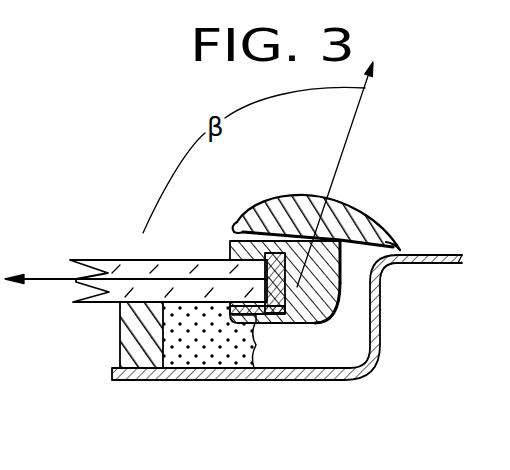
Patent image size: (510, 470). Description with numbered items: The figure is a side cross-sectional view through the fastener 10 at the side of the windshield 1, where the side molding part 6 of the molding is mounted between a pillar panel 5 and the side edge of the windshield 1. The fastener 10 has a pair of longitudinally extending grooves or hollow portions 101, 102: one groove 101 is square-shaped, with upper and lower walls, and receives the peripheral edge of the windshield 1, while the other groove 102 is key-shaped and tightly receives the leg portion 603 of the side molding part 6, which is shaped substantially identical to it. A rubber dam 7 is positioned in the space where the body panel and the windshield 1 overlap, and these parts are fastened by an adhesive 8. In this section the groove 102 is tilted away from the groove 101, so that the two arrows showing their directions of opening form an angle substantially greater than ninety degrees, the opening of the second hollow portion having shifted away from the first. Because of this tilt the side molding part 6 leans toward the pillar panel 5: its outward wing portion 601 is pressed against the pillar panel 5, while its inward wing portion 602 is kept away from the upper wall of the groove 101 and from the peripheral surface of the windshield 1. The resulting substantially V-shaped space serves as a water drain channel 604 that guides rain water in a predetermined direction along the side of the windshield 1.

The windshield 1 is at (126, 270).
The pillar panel 5 is at (430, 257).
The side molding part 6 is at (285, 193).
The rubber dam 7 is at (130, 347).
The adhesive 8 is at (213, 346).
The fastener 10 is at (325, 335).
The groove 101 is at (257, 324).
The groove 102 is at (342, 288).
The outward wing portion 601 is at (402, 246).
The inward wing portion 602 is at (243, 226).
The leg portion 603 is at (345, 283).
The water drain channel 604 is at (232, 243).